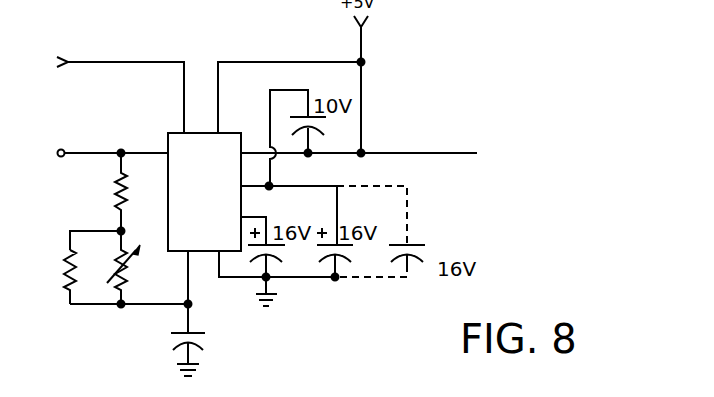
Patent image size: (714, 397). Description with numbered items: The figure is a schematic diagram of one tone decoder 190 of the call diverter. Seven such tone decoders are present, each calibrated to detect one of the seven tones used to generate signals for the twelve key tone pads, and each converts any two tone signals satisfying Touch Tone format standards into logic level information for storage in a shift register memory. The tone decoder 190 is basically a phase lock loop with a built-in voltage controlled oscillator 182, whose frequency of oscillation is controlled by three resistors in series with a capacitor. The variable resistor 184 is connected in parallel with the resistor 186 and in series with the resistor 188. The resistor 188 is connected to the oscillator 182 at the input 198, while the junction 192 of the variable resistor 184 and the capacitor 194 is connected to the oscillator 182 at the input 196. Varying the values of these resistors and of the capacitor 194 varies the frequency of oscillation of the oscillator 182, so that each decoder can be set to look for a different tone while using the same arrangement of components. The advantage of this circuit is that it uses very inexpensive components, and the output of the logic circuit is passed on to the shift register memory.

The voltage controlled oscillator 182 is at (204, 192).
The variable resistor 184 is at (105, 278).
The resistor 186 is at (65, 262).
The resistor 188 is at (112, 200).
The tone decoder 190 is at (518, 121).
The junction 192 is at (181, 308).
The capacitor 194 is at (205, 344).
The input 196 is at (191, 254).
The input 198 is at (163, 150).